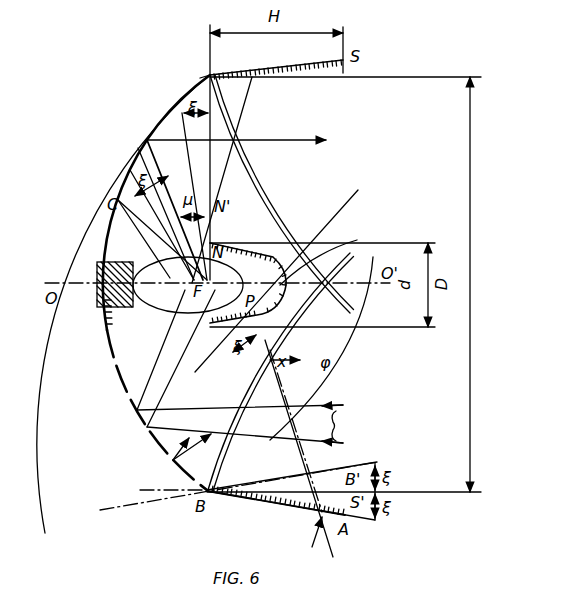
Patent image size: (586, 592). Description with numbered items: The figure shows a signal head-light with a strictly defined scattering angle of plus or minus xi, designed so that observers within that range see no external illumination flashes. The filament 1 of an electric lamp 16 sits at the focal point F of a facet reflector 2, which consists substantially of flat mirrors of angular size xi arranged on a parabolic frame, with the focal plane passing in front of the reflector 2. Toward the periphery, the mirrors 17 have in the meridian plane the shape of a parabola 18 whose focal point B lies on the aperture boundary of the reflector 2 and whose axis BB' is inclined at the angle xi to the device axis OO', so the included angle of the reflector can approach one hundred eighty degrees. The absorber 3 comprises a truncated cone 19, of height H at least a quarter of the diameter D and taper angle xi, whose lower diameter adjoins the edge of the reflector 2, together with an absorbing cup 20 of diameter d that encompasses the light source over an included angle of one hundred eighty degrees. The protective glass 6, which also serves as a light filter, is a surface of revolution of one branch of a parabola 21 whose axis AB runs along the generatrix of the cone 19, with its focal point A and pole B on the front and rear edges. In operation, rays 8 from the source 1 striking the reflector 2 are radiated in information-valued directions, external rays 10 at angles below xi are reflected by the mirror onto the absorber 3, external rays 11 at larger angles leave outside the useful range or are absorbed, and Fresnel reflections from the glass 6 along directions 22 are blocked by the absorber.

The filament 1 is at (152, 264).
The facet reflector 2 is at (147, 140).
The absorber 3 is at (258, 66).
The protective glass 6 is at (317, 298).
The rays 8 is at (246, 141).
The external illumination rays 10 is at (248, 424).
The external rays 11 is at (282, 270).
The electric lamp 16 is at (104, 250).
The peripheral mirrors 17 is at (200, 78).
The parabola 18 is at (45, 425).
The truncated cone 19 is at (276, 505).
The absorbing cup 20 is at (326, 251).
The parabola 21 is at (350, 275).
The directions 22 is at (299, 448).